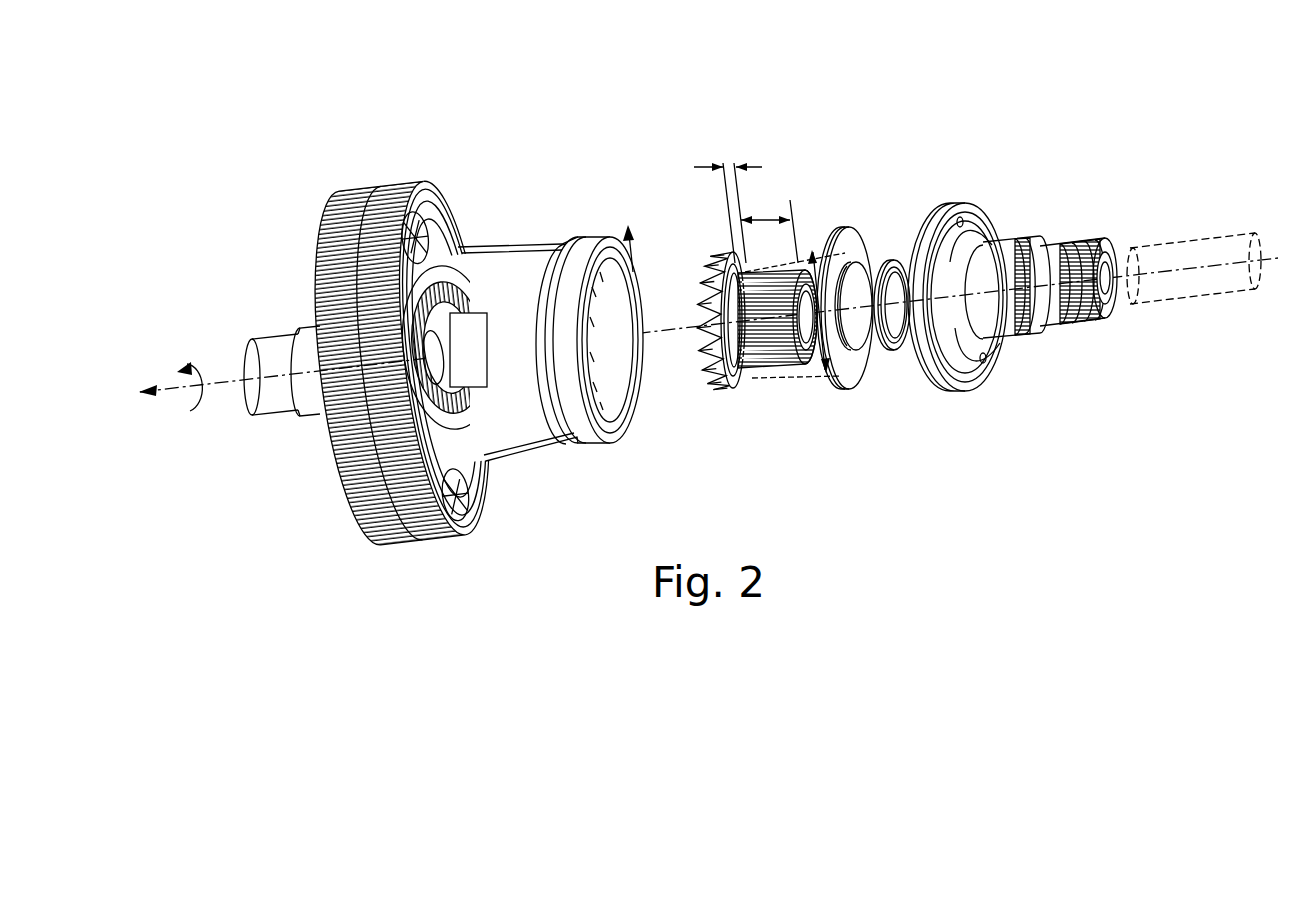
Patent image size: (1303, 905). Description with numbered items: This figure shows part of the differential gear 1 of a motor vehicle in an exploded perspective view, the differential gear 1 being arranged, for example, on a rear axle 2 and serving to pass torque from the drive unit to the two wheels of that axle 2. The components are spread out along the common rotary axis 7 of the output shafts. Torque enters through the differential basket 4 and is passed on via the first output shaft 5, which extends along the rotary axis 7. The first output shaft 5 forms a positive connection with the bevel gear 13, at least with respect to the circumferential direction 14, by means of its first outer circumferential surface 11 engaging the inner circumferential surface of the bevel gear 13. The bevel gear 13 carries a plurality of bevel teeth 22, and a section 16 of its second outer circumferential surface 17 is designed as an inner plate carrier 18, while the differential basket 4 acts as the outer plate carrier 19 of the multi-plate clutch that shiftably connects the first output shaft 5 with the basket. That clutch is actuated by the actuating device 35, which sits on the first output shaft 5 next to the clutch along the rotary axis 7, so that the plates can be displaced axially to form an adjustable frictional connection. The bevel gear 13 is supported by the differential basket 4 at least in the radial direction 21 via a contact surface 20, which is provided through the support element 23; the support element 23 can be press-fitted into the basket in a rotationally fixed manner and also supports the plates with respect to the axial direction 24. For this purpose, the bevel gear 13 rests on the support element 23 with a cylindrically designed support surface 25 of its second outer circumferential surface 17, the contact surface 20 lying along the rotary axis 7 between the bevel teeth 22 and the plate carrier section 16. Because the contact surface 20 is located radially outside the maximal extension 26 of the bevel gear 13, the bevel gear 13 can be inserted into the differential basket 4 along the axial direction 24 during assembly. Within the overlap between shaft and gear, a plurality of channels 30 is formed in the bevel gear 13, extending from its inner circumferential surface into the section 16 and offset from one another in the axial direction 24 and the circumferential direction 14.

The differential gear 1 is at (866, 106).
The axle 2 is at (1094, 190).
The differential basket 4 is at (530, 250).
The first output shaft 5 is at (1203, 255).
The rotary axis 7 is at (1233, 275).
The first outer circumferential surface 11 is at (783, 367).
The bevel gear 13 is at (710, 262).
The circumferential direction 14 is at (263, 381).
The section 16 is at (763, 216).
The second outer circumferential surface 17 is at (810, 370).
The inner plate carrier 18 is at (763, 380).
The outer plate carrier 19 is at (643, 410).
The contact surface 20 is at (875, 358).
The radial direction 21 is at (648, 244).
The bevel teeth 22 is at (720, 370).
The support element 23 is at (850, 243).
The axial direction 24 is at (166, 395).
The support surface 25 is at (723, 165).
The maximal extension 26 is at (870, 375).
The channels 30 is at (777, 277).
The actuating device 35 is at (1005, 240).